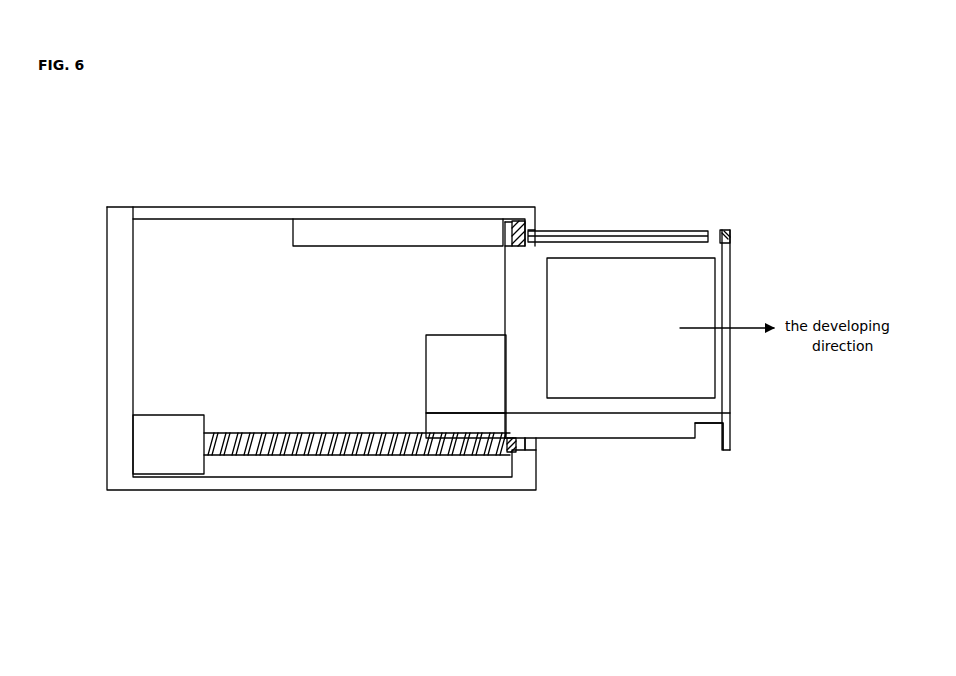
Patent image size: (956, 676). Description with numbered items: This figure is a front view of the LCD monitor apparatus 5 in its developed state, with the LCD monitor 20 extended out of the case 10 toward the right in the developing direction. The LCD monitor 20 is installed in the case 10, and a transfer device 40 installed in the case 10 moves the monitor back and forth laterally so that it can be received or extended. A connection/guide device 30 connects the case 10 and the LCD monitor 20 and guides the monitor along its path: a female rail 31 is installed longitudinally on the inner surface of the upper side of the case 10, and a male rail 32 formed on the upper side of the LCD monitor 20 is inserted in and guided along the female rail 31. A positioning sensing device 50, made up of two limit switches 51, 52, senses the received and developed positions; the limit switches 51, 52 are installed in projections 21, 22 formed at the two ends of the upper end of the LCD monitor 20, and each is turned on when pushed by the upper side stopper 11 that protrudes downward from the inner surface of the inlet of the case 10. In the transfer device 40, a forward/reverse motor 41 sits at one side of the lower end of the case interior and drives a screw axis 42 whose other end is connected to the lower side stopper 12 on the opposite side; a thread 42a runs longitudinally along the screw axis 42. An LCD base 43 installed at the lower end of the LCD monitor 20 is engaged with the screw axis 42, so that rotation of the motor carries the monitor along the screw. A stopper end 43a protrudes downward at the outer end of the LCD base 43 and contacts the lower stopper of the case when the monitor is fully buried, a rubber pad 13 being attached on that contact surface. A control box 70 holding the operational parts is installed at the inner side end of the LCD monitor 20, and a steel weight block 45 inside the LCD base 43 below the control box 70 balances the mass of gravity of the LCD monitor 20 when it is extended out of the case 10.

The monitor apparatus 5 is at (204, 540).
The case 10 is at (107, 339).
The upper side stopper 11 is at (535, 240).
The lower side stopper 12 is at (512, 452).
The rubber pad 13 is at (535, 445).
The LCD monitor 20 is at (680, 278).
The projection 21 is at (503, 243).
The projection 22 is at (730, 230).
The connection/guide device 30 is at (585, 158).
The female rail 31 is at (460, 228).
The male rail 32 is at (560, 230).
The transfer device 40 is at (218, 425).
The forward/reverse motor 41 is at (166, 453).
The screw axis 42 is at (272, 460).
The thread 42a is at (320, 432).
The LCD base 43 is at (650, 438).
The stopper end 43a is at (728, 455).
The weight block 45 is at (455, 430).
The positioning sensing device 50 is at (635, 227).
The limit switch 51 is at (550, 245).
The limit switch 52 is at (712, 230).
The control box 70 is at (437, 347).